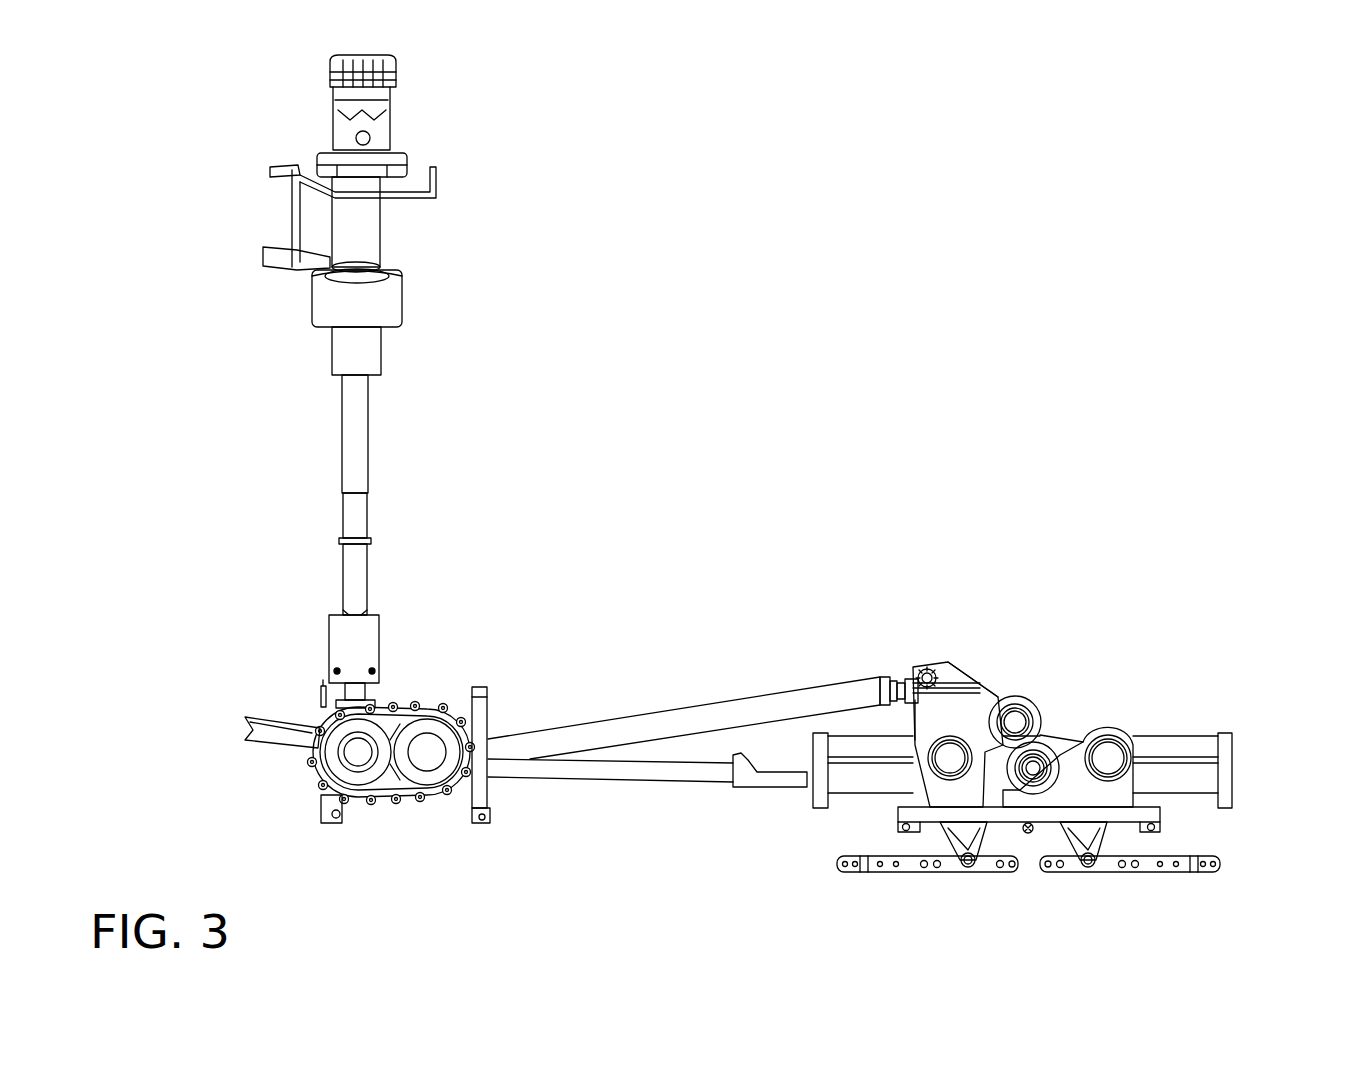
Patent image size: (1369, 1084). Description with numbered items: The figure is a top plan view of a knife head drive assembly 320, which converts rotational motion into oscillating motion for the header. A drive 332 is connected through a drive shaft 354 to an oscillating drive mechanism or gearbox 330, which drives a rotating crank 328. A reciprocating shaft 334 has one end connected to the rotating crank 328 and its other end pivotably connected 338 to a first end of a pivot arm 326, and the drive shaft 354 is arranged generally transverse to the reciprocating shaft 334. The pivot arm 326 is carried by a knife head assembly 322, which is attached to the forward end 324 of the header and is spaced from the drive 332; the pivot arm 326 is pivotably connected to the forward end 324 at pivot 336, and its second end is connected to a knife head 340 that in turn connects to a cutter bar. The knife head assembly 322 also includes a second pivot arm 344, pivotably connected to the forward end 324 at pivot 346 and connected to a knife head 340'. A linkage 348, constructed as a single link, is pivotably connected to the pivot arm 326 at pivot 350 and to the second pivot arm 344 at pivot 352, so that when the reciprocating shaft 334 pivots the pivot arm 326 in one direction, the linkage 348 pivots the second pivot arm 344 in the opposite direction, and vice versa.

The knife head drive assembly 320 is at (832, 406).
The knife head assembly 322 is at (1090, 686).
The forward end 324 is at (1175, 815).
The pivot arm 326 is at (980, 688).
The rotating crank 328 is at (404, 707).
The gearbox 330 is at (433, 697).
The drive 332 is at (383, 108).
The reciprocating shaft 334 is at (618, 718).
The pivot 336 is at (945, 758).
The pivotable connection 338 is at (923, 670).
The knife head 340 is at (927, 876).
The knife head 340' is at (1130, 873).
The second pivot arm 344 is at (1080, 720).
The pivot 346 is at (1108, 758).
The linkage 348 is at (1033, 768).
The pivot 350 is at (1020, 712).
The pivot 352 is at (1043, 772).
The drive shaft 354 is at (368, 438).